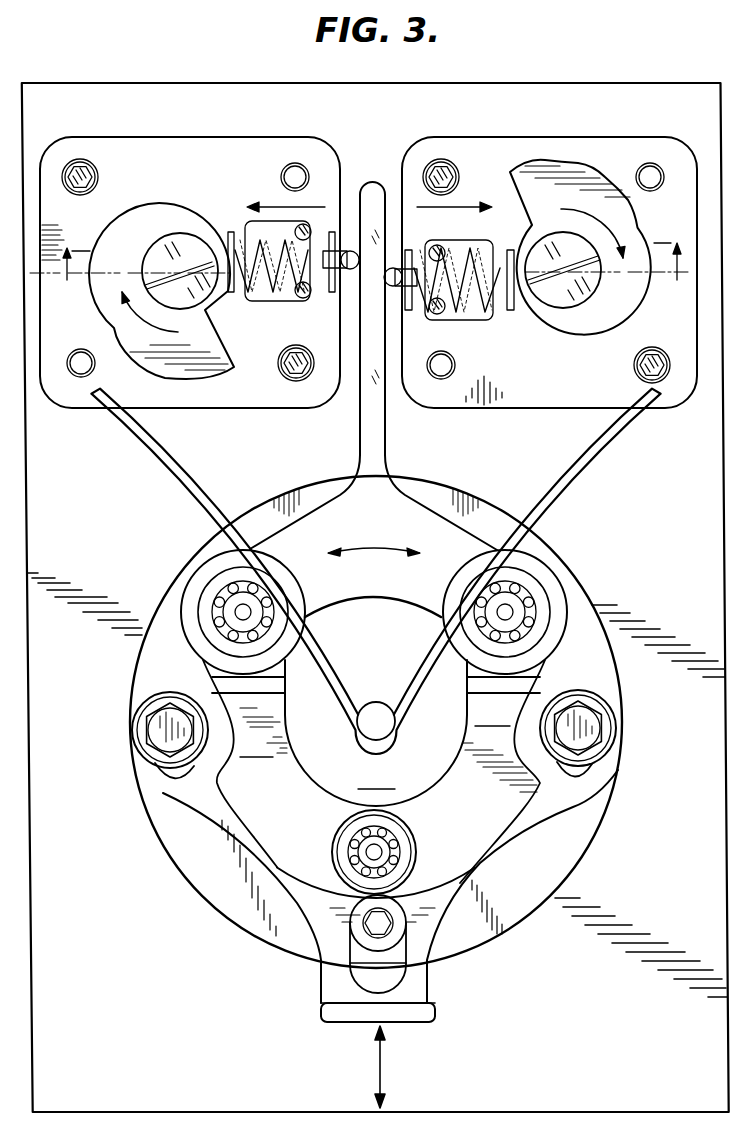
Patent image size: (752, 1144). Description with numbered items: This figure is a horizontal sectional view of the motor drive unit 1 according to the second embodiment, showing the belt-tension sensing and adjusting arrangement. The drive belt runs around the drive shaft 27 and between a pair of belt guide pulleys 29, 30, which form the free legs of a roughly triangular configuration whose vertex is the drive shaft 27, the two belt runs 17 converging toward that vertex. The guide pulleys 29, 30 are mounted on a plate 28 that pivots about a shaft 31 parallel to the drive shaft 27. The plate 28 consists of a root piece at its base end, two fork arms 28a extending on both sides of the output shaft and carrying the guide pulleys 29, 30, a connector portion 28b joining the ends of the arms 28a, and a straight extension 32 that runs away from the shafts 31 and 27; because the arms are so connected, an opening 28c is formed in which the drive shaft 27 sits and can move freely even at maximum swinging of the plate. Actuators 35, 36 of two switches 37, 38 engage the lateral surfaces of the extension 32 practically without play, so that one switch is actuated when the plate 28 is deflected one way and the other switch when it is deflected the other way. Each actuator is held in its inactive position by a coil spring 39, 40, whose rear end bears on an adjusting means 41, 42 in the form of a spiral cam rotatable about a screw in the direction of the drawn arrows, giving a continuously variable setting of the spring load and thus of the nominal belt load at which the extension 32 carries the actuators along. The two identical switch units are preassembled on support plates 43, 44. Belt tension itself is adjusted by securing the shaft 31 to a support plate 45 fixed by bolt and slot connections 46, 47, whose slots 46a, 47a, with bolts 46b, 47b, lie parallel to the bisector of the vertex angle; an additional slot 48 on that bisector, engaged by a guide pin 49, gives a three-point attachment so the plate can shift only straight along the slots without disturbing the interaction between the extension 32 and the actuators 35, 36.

The drive apparatus 1 is at (82, 552).
The V-shaped arms 17 is at (178, 470).
The drive shaft 27 is at (367, 712).
The plate 28 is at (477, 840).
The arms 28a is at (375, 731).
The connector portion 28b is at (393, 588).
The opening 28c is at (376, 779).
The guide pulley 29 is at (197, 585).
The guide pulley 30 is at (550, 583).
The shaft 31 is at (372, 850).
The extension 32 is at (378, 188).
The actuator 35 is at (352, 250).
The actuator 36 is at (397, 292).
The switch 37 is at (476, 248).
The switch 38 is at (262, 294).
The coil spring 39 is at (278, 300).
The coil spring 40 is at (462, 318).
The adjusting means 41 is at (153, 218).
The adjusting means 42 is at (637, 280).
The support plate 43 is at (558, 145).
The support plate 44 is at (202, 155).
The support plate 45 is at (162, 792).
The bolt and slot connection 46 is at (142, 756).
The slot 46a is at (166, 778).
The bolt 46b is at (178, 712).
The bolt and slot connection 47 is at (602, 762).
The slot 47a is at (583, 777).
The bolt 47b is at (592, 718).
The slot 48 is at (395, 968).
The guide pin 49 is at (393, 913).